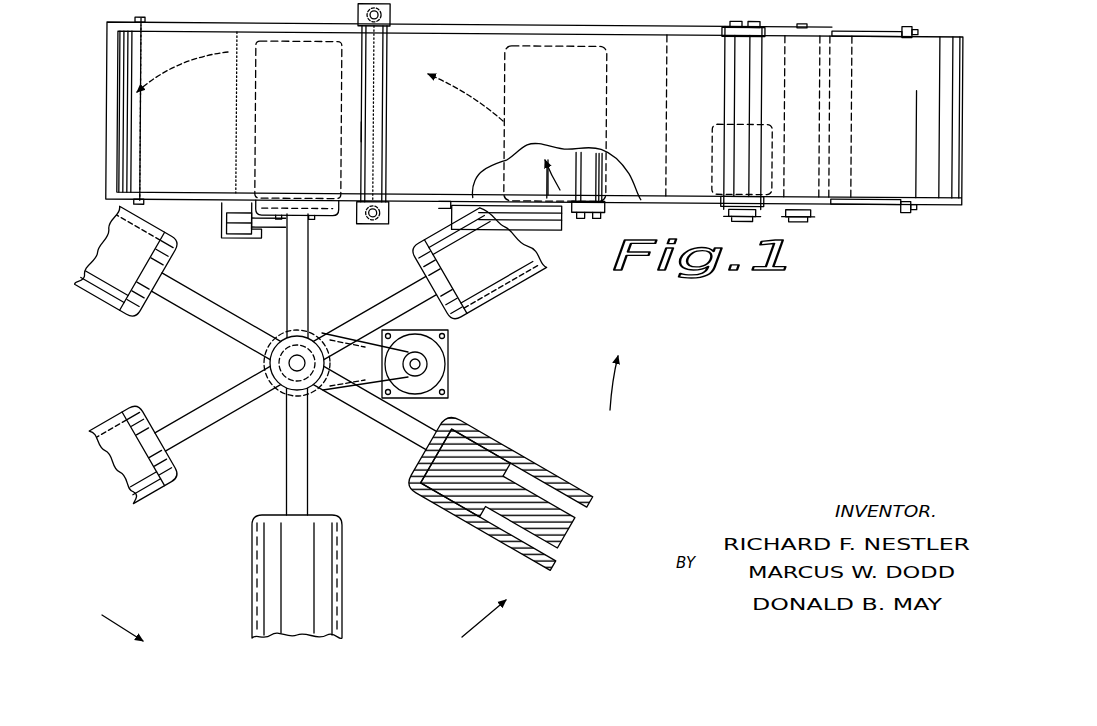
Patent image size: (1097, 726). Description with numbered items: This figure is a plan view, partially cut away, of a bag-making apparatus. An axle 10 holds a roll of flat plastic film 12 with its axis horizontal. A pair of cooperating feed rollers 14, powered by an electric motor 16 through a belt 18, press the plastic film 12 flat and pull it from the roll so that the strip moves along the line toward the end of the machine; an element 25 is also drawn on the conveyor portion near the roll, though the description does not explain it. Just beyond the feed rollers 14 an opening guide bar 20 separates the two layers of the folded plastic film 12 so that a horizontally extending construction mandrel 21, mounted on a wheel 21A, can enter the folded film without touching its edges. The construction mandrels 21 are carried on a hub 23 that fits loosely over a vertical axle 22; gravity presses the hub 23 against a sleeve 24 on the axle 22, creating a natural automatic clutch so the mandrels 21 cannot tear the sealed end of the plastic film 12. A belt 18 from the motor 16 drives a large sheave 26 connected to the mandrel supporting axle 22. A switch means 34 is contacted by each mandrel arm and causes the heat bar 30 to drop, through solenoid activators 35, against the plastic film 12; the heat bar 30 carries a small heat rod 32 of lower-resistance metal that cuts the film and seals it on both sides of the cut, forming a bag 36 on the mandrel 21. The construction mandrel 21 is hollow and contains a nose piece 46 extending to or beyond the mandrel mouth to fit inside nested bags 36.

The axle 10 is at (534, 128).
The plastic film 12 is at (949, 117).
The feed rollers 14 is at (743, 121).
The electric motor 16 is at (742, 159).
The belt 18 is at (358, 352).
The opening guide bar 20 is at (556, 181).
The construction mandrel 21 is at (364, 416).
The wheel 21A is at (574, 448).
The vertical axle 22 is at (293, 364).
The hub 23 is at (270, 362).
The sleeve 24 is at (288, 340).
The conveyor belt 25 is at (158, 108).
The large sheave 26 is at (311, 338).
The heat bar 30 is at (388, 135).
The heat rod 32 is at (388, 172).
The switch means 34 is at (253, 220).
The solenoid activators 35 is at (374, 114).
The bag 36 is at (148, 236).
The nose piece 46 is at (582, 518).